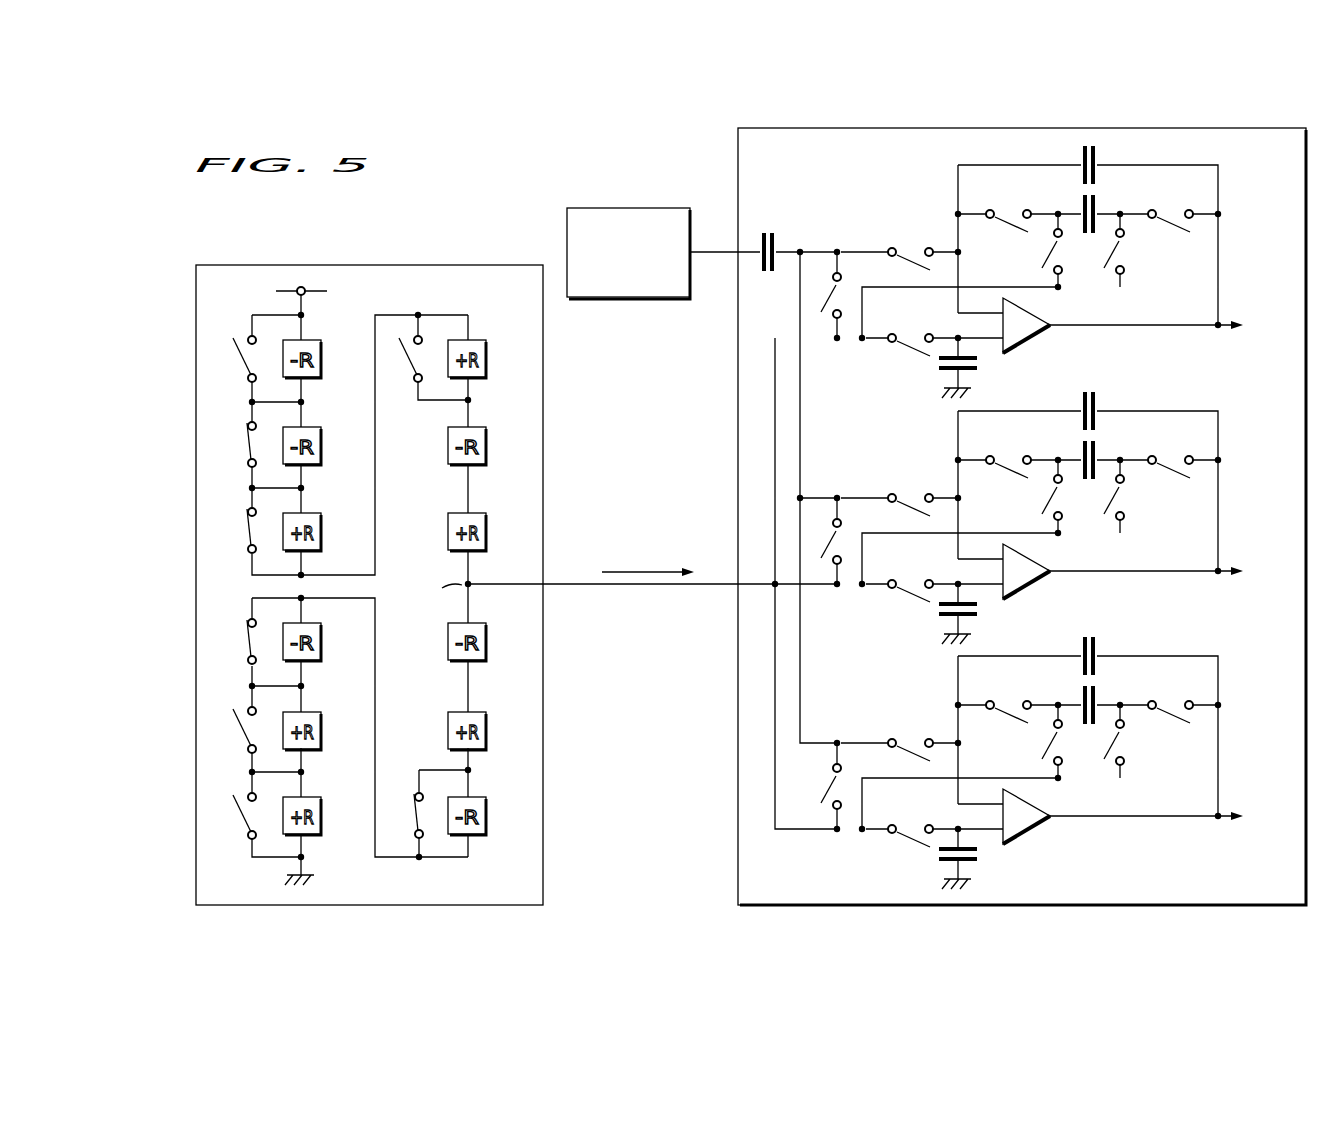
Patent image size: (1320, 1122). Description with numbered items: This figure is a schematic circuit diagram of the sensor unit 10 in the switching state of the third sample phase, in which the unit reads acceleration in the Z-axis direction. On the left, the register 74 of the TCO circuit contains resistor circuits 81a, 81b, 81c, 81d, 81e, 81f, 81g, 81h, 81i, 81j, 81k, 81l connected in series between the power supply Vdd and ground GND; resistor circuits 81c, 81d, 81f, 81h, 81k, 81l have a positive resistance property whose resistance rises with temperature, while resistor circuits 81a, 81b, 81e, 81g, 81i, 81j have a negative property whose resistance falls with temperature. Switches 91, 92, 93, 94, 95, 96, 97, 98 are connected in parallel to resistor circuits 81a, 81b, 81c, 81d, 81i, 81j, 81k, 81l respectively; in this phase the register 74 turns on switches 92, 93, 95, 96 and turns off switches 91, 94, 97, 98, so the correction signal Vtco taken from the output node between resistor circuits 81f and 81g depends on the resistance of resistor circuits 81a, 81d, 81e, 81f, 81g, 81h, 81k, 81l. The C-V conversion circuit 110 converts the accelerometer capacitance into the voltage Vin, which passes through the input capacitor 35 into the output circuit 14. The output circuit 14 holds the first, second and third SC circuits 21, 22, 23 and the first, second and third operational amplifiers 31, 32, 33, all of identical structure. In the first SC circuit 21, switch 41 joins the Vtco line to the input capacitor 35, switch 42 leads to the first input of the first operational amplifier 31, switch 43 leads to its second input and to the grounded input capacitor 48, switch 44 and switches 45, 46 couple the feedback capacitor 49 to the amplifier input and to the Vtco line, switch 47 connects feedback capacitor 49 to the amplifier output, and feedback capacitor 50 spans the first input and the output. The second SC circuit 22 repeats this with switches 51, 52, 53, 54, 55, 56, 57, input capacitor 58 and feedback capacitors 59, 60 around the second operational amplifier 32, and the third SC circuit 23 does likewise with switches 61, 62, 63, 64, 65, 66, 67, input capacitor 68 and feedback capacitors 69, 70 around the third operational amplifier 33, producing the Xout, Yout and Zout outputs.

The sensor unit 10 is at (537, 172).
The output circuit 14 is at (738, 431).
The first switched capacitor circuit 21 is at (871, 183).
The second switched capacitor circuit 22 is at (1048, 514).
The third switched capacitor circuit 23 is at (1048, 759).
The first operational amplifier 31 is at (1038, 343).
The second operational amplifier 32 is at (1037, 579).
The third operational amplifier 33 is at (1037, 824).
The input capacitor 35 is at (782, 243).
The switch 41 is at (816, 298).
The switch 42 is at (909, 251).
The switch 43 is at (914, 357).
The switch 44 is at (1011, 212).
The switch 45 is at (1043, 254).
The switch 46 is at (1119, 254).
The switch 47 is at (1171, 212).
The input capacitor 48 is at (979, 371).
The feedback capacitor 49 is at (1103, 205).
The feedback capacitor 50 is at (1103, 162).
The switch 51 is at (824, 541).
The switch 52 is at (910, 490).
The switch 53 is at (905, 604).
The switch 54 is at (1008, 451).
The switch 55 is at (1033, 497).
The switch 56 is at (1130, 497).
The switch 57 is at (1170, 451).
The input capacitor 58 is at (976, 614).
The feedback capacitor 59 is at (1111, 452).
The feedback capacitor 60 is at (1111, 407).
The switch 61 is at (824, 786).
The switch 62 is at (910, 735).
The switch 63 is at (905, 849).
The switch 64 is at (1008, 696).
The switch 65 is at (1033, 742).
The switch 66 is at (1130, 742).
The switch 67 is at (1170, 696).
The input capacitor 68 is at (976, 859).
The feedback capacitor 69 is at (1111, 697).
The feedback capacitor 70 is at (1111, 652).
The register 74 is at (439, 246).
The resistor circuit 81a is at (324, 377).
The resistor circuit 81b is at (324, 443).
The resistor circuit 81c is at (324, 529).
The resistor circuit 81d is at (489, 356).
The resistor circuit 81e is at (489, 444).
The resistor circuit 81f is at (489, 531).
The resistor circuit 81g is at (489, 642).
The resistor circuit 81h is at (489, 728).
The resistor circuit 81i is at (489, 814).
The resistor circuit 81j is at (324, 641).
The resistor circuit 81k is at (324, 728).
The resistor circuit 81l is at (330, 803).
The switch 91 is at (242, 376).
The switch 92 is at (242, 462).
The switch 93 is at (242, 548).
The switch 94 is at (413, 382).
The switch 95 is at (408, 804).
The switch 96 is at (242, 661).
The switch 97 is at (238, 747).
The switch 98 is at (238, 832).
The C-V conversion circuit 110 is at (668, 206).